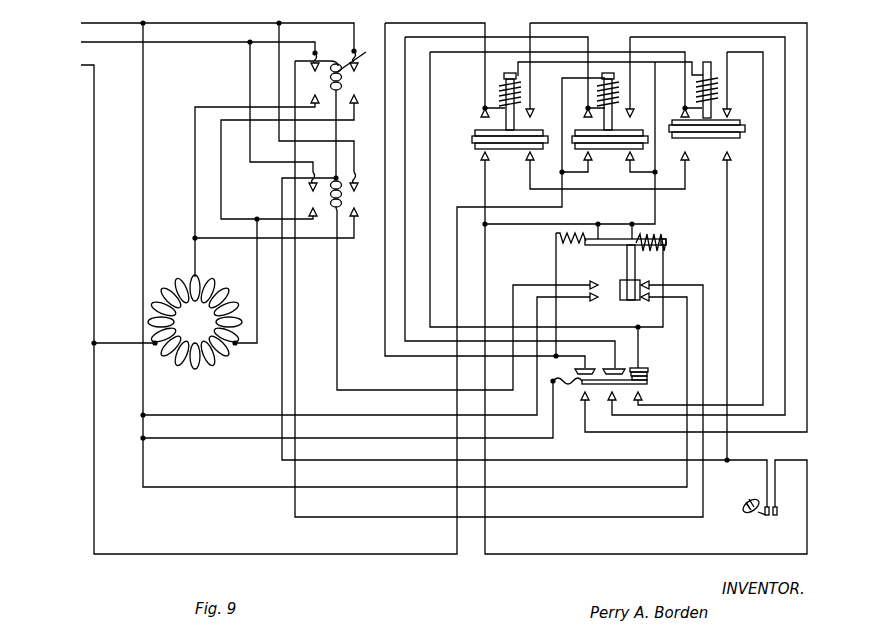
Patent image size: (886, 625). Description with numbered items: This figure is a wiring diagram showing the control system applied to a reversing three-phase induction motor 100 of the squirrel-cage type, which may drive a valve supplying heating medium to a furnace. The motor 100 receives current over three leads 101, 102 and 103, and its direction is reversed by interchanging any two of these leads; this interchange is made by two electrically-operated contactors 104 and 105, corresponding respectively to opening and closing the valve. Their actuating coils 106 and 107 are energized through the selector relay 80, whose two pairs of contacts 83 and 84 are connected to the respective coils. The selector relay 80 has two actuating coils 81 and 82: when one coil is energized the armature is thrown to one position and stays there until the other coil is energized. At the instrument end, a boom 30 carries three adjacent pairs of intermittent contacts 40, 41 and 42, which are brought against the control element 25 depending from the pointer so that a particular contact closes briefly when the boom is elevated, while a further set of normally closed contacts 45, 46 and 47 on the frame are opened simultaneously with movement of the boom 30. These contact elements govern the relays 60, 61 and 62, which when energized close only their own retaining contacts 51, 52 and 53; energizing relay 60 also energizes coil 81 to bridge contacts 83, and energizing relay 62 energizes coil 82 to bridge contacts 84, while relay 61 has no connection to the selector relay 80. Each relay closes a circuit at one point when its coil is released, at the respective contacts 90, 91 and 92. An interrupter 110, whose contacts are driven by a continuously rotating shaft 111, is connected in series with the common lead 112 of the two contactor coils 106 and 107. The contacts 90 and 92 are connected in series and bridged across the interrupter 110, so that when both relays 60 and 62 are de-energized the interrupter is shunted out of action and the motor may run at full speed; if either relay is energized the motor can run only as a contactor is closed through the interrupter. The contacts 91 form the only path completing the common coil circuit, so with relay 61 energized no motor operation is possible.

The motor 100 is at (221, 356).
The lead 101 is at (125, 346).
The lead 102 is at (193, 247).
The lead 103 is at (255, 248).
The contactor 104 is at (357, 198).
The contactor 105 is at (349, 86).
The actuating coil 106 is at (330, 205).
The actuating coil 107 is at (366, 52).
The common lead 112 is at (338, 132).
The relay 60 is at (506, 73).
The relay 61 is at (610, 73).
The relay 62 is at (720, 55).
The contacts 51 is at (528, 120).
The contacts 52 is at (628, 120).
The contacts 53 is at (726, 120).
The contacts 90 is at (507, 154).
The contacts 91 is at (609, 154).
The contacts 92 is at (706, 145).
The selector relay 80 is at (608, 239).
The actuating coil 81 is at (580, 248).
The actuating coil 82 is at (658, 238).
The contacts 83 is at (592, 300).
The contacts 84 is at (646, 299).
The intermittent contacts 40 is at (575, 368).
The intermittent contacts 41 is at (617, 368).
The intermittent contacts 42 is at (645, 370).
The control element 25 is at (647, 378).
The boom 30 is at (647, 384).
The contacts 45 is at (583, 402).
The contacts 46 is at (609, 402).
The contacts 47 is at (635, 402).
The interrupter 110 is at (762, 520).
The shaft 111 is at (743, 506).